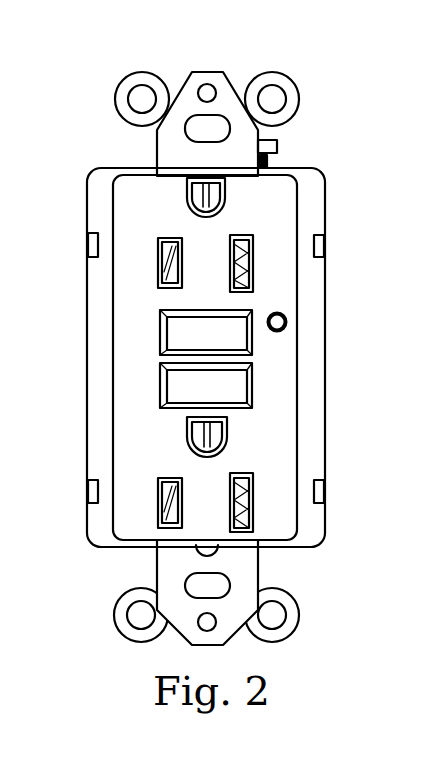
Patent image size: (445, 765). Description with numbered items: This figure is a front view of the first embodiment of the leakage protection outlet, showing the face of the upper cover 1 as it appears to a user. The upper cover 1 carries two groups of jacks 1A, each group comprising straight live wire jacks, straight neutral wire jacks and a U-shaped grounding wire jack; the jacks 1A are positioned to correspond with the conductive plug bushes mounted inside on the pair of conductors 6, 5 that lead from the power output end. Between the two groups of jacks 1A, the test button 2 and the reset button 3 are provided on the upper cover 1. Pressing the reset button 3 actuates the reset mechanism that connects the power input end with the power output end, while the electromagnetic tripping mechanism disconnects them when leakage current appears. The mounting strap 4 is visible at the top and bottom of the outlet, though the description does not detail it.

The upper cover 1 is at (307, 217).
The jacks 1A is at (217, 435).
The test button 2 is at (183, 339).
The reset button 3 is at (177, 395).
The mounting strap 4 is at (192, 102).
The conductor 5 is at (252, 275).
The conductor 6 is at (167, 268).